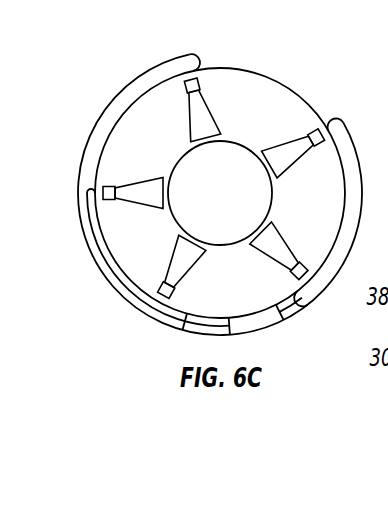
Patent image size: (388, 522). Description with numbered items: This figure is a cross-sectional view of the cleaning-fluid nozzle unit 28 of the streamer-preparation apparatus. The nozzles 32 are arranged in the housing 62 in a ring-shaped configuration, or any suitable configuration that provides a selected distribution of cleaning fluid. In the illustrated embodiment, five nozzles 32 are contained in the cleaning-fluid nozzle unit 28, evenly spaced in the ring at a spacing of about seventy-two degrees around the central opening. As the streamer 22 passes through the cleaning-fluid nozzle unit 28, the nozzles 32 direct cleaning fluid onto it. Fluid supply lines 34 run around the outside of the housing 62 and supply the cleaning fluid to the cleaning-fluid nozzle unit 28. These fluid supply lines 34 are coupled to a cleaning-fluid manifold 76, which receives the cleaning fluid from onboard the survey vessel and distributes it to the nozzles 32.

The streamer 22 is at (228, 168).
The cleaning-fluid nozzle unit 28 is at (123, 318).
The nozzles 32 is at (187, 117).
The fluid supply lines 34 is at (145, 72).
The housing 62 is at (222, 68).
The cleaning-fluid manifold 76 is at (258, 332).